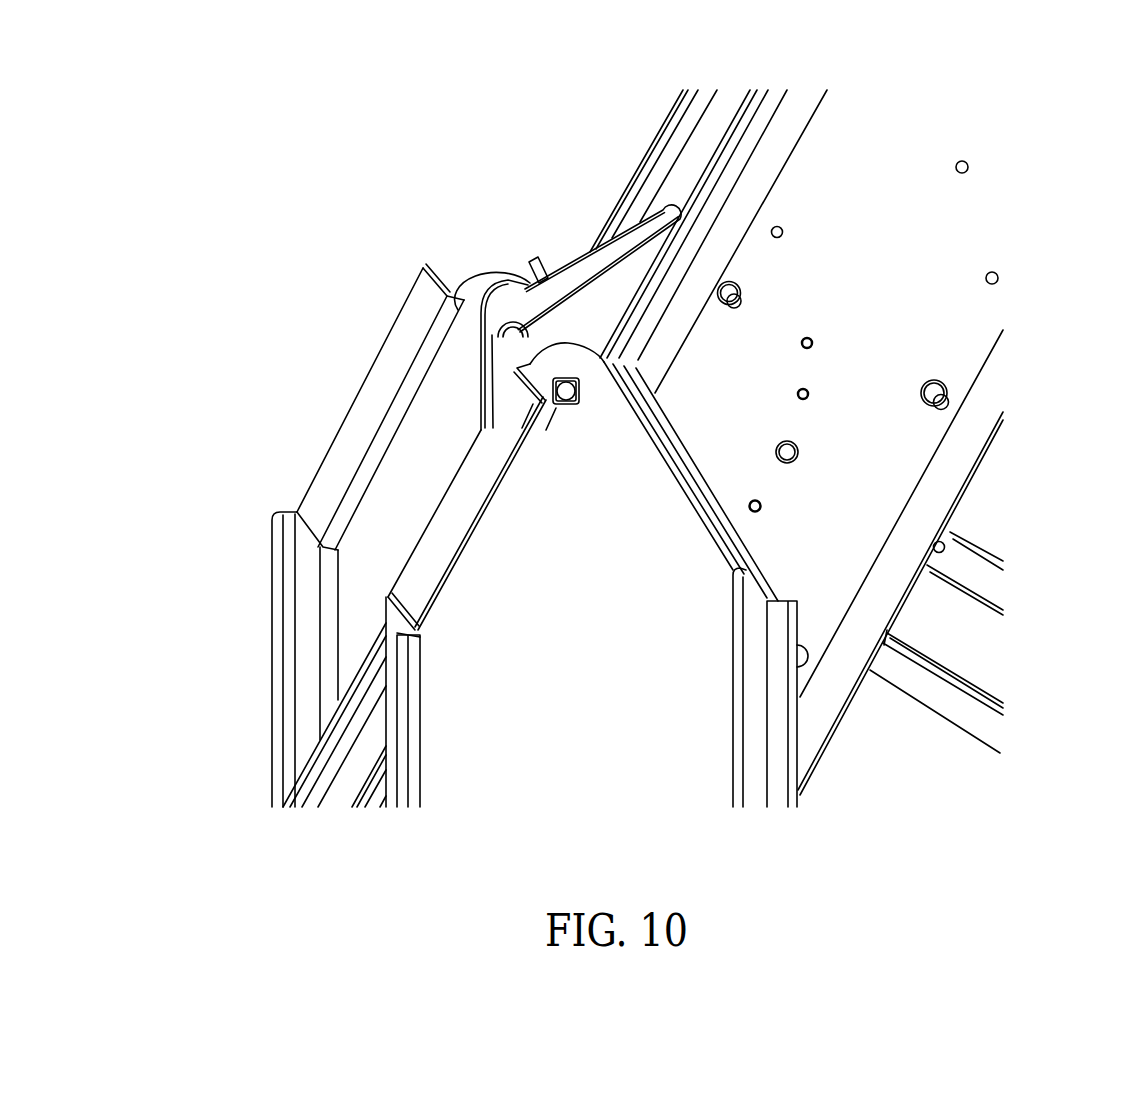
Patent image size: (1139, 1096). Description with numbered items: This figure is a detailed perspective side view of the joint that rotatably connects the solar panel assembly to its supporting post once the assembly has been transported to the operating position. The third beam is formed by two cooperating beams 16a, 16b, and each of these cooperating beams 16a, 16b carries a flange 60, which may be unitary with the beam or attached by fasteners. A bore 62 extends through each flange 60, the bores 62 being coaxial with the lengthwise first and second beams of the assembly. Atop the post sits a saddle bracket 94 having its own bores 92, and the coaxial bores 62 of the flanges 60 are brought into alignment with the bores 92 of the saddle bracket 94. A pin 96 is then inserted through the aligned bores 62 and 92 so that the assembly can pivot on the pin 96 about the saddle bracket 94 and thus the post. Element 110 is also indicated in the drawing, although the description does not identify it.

The cooperating beam 16a is at (660, 190).
The cooperating beam 16b is at (892, 127).
The flange 60 is at (536, 262).
The bore 62 is at (516, 325).
The bore 92 is at (562, 405).
The saddle bracket 94 is at (389, 378).
The pin 96 is at (505, 340).
The pin 110 is at (575, 322).